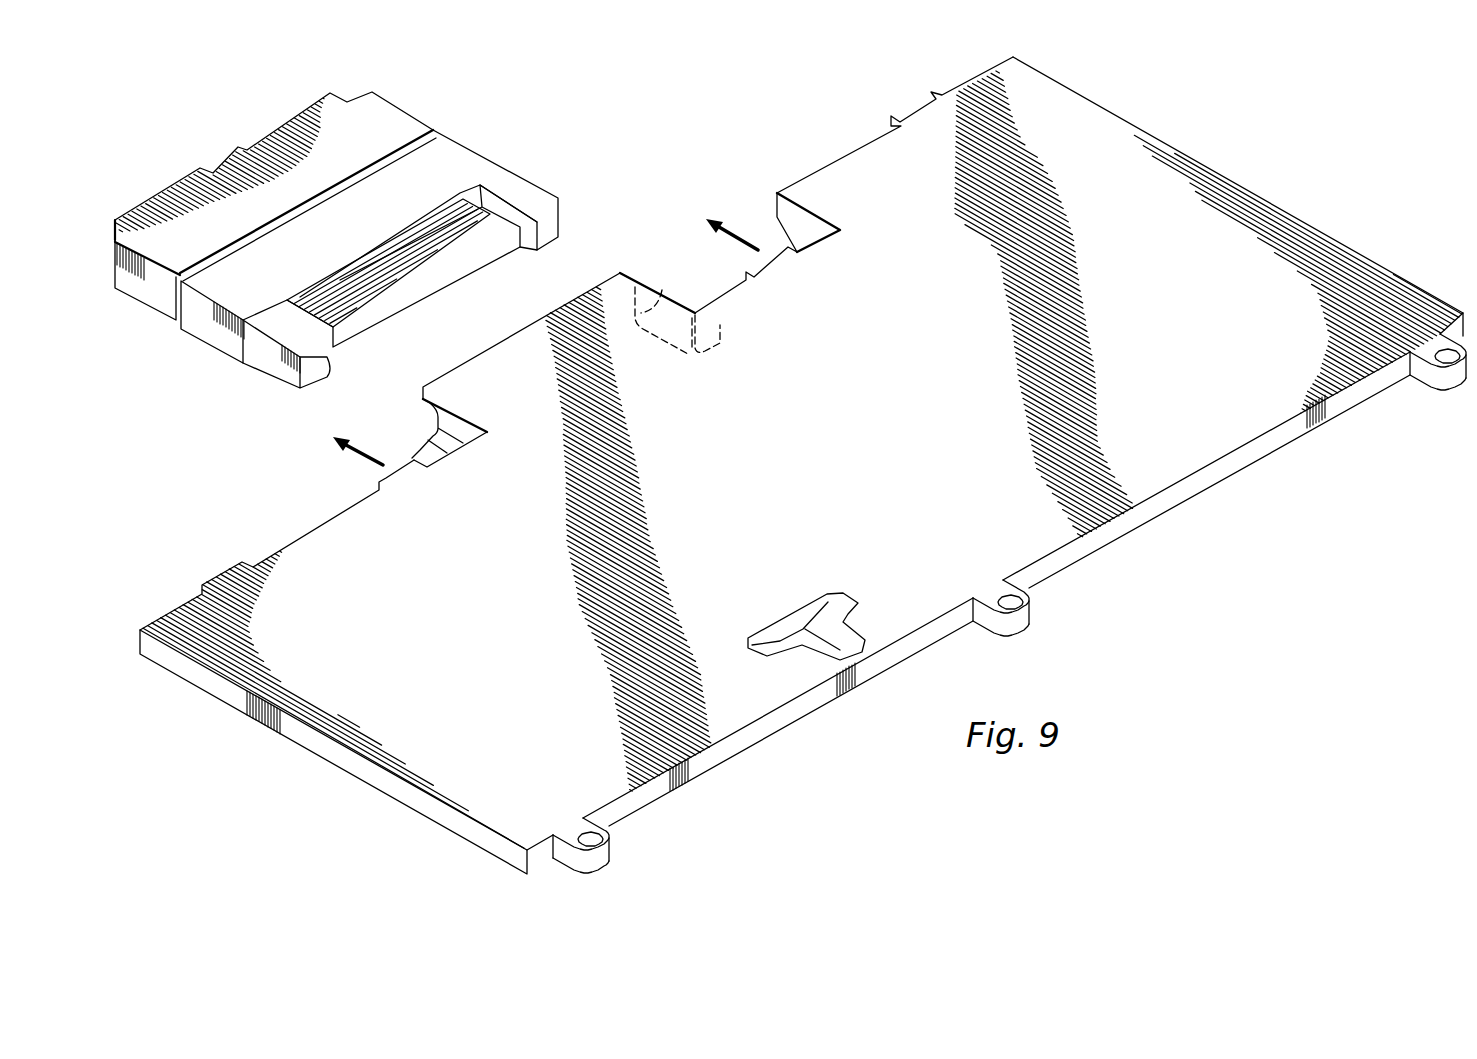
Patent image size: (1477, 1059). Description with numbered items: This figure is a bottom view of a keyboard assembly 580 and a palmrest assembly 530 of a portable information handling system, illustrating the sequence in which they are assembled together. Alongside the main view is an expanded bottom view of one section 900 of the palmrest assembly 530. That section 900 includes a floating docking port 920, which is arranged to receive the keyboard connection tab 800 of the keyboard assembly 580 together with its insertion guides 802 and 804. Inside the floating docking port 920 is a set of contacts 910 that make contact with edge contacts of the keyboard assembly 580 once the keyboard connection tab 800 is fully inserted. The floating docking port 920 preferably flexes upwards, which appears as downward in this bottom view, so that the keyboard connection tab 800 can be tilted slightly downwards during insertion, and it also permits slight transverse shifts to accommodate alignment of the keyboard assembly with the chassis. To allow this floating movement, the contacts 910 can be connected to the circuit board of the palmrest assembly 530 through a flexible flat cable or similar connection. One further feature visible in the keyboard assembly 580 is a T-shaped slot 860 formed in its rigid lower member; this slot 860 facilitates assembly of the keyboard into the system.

The palmrest assembly 530 is at (228, 101).
The section of palmrest assembly 900 is at (502, 162).
The floating docking port 920 is at (457, 153).
The contacts 910 is at (377, 283).
The keyboard assembly 580 is at (1264, 158).
The keyboard connection tab 800 is at (510, 357).
The insertion guide 802 is at (427, 453).
The insertion guide 804 is at (673, 317).
The T-shaped slot 860 is at (793, 627).